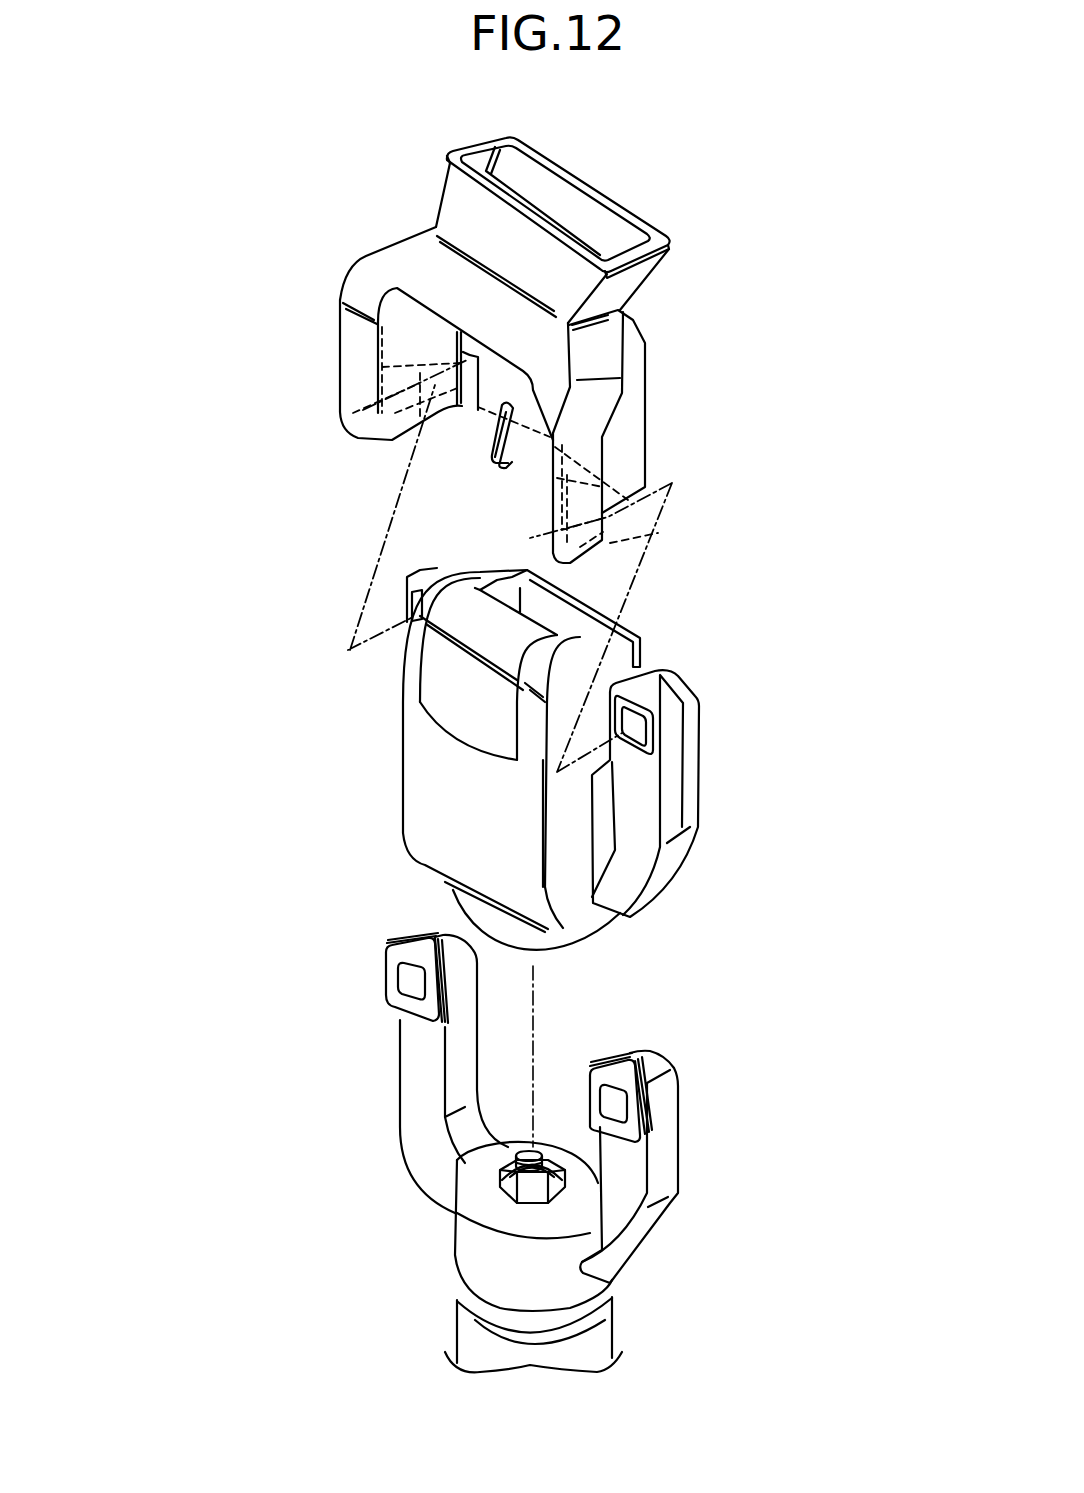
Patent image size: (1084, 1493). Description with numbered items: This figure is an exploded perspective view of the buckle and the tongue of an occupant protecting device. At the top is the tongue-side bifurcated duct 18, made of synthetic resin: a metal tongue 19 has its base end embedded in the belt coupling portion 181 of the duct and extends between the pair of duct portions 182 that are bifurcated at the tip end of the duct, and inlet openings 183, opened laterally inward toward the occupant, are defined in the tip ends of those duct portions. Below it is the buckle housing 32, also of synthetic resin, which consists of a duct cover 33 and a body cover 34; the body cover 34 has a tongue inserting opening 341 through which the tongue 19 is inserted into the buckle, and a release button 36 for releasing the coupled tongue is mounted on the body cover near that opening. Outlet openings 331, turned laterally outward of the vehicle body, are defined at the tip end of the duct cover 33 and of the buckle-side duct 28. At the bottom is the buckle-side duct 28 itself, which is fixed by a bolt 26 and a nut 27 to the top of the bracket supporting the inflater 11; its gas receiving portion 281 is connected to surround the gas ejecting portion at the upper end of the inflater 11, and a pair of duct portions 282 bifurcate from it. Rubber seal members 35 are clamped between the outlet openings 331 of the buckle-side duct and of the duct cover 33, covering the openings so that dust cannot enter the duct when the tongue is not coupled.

The inflater 11 is at (605, 1343).
The tongue-side bifurcated duct 18 is at (490, 454).
The belt coupling portion 181 is at (627, 215).
The duct portions 182 is at (530, 507).
The inlet openings 183 is at (412, 420).
The tongue 19 is at (497, 435).
The bolt 26 is at (528, 1155).
The nut 27 is at (552, 1167).
The buckle-side duct 28 is at (529, 1135).
The gas receiving portion 281 is at (463, 1238).
The duct portions 282 is at (708, 1138).
The buckle housing 32 is at (546, 714).
The duct cover 33 is at (551, 697).
The outlet openings 331 is at (476, 696).
The body cover 34 is at (437, 830).
The tongue inserting opening 341 is at (550, 605).
The seal members 35 is at (383, 983).
The release button 36 is at (433, 693).